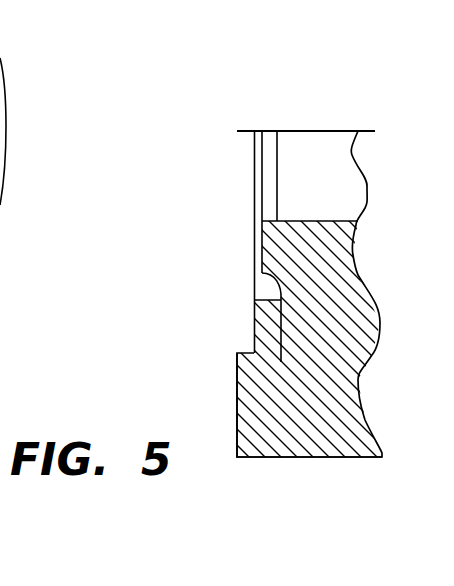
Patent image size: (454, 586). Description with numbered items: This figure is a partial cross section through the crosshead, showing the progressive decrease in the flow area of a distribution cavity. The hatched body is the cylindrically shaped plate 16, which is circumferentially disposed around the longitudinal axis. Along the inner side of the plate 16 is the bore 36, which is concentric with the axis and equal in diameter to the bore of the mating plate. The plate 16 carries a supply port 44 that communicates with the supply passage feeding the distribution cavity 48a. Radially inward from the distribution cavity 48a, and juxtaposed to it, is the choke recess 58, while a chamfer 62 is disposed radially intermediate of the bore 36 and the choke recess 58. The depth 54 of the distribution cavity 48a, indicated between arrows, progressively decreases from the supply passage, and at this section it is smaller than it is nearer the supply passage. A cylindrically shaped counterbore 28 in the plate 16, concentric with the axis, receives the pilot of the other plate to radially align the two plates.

The plate 16 is at (269, 104).
The supply port 44 is at (5, 95).
The chamfer 62 is at (270, 220).
The bore 36 is at (337, 219).
The choke recess 58 is at (262, 252).
The distribution cavity 48a is at (260, 296).
The depth 54 is at (318, 332).
The counterbore 28 is at (238, 353).